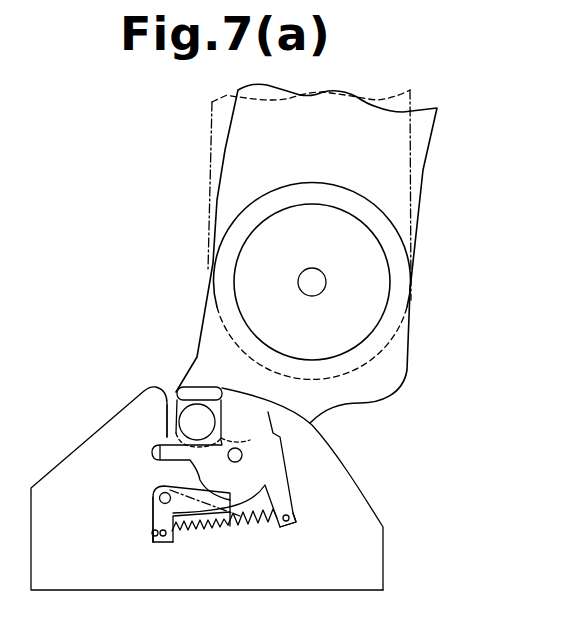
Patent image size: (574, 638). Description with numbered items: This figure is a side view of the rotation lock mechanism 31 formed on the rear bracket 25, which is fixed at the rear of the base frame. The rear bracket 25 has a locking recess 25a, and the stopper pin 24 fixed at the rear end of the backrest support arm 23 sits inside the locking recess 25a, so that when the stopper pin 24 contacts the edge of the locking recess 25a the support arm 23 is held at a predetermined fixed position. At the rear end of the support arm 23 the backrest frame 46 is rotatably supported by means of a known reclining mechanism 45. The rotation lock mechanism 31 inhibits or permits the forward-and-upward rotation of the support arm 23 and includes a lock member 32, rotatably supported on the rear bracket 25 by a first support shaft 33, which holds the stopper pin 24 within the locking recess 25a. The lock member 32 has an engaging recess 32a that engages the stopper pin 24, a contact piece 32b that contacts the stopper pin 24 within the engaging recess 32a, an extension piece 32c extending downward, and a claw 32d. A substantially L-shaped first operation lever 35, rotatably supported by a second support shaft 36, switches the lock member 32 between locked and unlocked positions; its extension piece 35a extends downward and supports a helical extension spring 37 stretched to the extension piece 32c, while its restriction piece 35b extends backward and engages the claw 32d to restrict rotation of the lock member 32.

The backrest support arm 23 is at (205, 325).
The stopper pin 24 is at (176, 422).
The rear bracket 25 is at (362, 492).
The locking recess 25a is at (155, 437).
The rotation lock mechanism 31 is at (83, 530).
The lock member 32 is at (273, 437).
The engaging recess 32a is at (223, 388).
The contact piece 32b is at (158, 468).
The extension piece 32c is at (296, 512).
The claw 32d is at (258, 530).
The first support shaft 33 is at (242, 457).
The first operation lever 35 is at (150, 522).
The extension piece 35a is at (172, 543).
The restriction piece 35b is at (230, 528).
The second support shaft 36 is at (158, 498).
The helical extension spring 37 is at (283, 521).
The reclining mechanism 45 is at (390, 300).
The backrest frame 46 is at (225, 150).